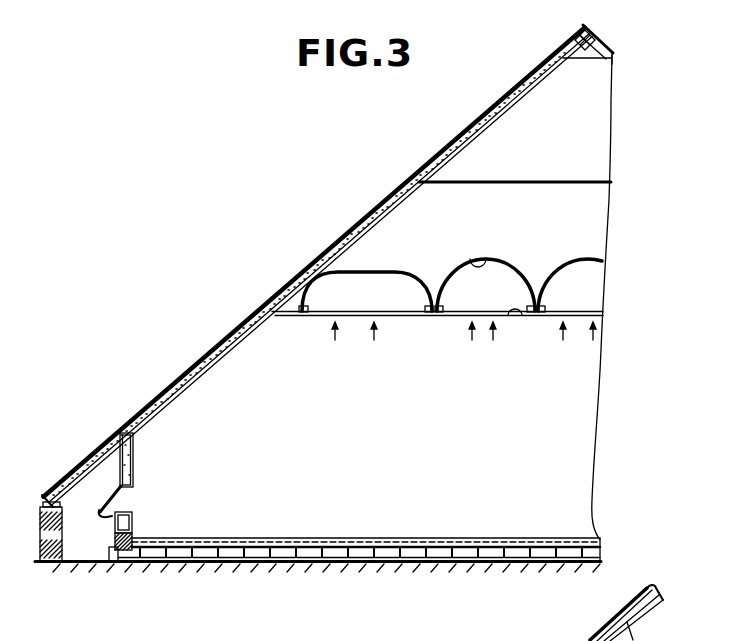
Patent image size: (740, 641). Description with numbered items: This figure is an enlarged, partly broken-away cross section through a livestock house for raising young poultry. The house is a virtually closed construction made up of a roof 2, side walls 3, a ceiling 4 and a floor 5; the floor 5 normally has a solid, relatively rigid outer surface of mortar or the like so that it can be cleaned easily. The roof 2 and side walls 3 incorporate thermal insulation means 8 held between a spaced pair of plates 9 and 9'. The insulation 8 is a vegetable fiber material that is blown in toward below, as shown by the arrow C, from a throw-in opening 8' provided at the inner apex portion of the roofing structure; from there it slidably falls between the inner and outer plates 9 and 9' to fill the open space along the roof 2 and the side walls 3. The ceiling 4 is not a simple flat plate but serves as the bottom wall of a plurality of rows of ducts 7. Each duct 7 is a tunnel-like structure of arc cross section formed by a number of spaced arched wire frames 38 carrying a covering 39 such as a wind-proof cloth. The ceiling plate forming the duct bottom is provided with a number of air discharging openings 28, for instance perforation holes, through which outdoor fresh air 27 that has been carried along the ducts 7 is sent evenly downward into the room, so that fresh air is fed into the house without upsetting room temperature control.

The roof 2 is at (377, 203).
The side wall 3 is at (134, 455).
The ceiling 4 is at (287, 318).
The floor 5 is at (375, 528).
The duct 7 is at (371, 304).
The thermal insulation means 8 is at (321, 270).
The throw-in opening 8' is at (621, 76).
The inner plate 9 is at (309, 288).
The outer plate 9' is at (187, 425).
The outdoor fresh air 27 is at (458, 349).
The air discharging opening 28 is at (519, 318).
The arched wire frame 38 is at (476, 258).
The covering 39 is at (518, 267).
The arrow indicating blow-in direction C is at (577, 59).